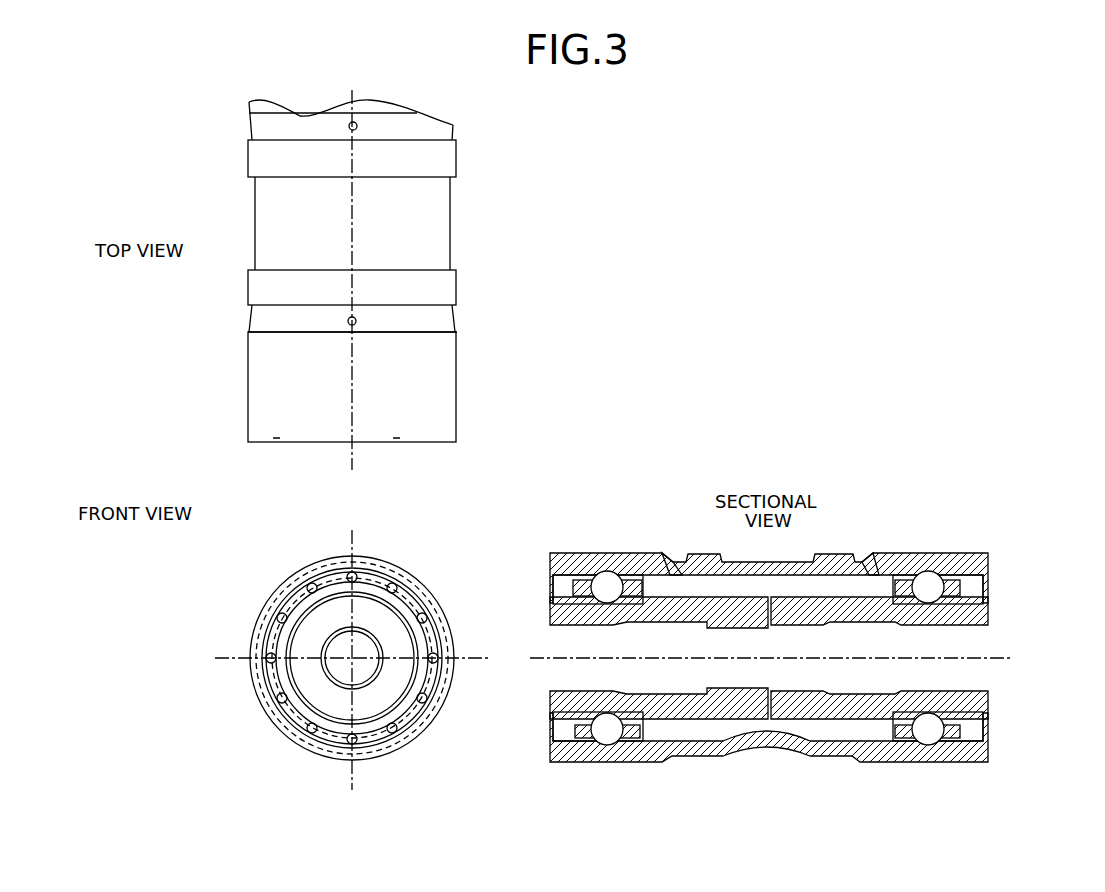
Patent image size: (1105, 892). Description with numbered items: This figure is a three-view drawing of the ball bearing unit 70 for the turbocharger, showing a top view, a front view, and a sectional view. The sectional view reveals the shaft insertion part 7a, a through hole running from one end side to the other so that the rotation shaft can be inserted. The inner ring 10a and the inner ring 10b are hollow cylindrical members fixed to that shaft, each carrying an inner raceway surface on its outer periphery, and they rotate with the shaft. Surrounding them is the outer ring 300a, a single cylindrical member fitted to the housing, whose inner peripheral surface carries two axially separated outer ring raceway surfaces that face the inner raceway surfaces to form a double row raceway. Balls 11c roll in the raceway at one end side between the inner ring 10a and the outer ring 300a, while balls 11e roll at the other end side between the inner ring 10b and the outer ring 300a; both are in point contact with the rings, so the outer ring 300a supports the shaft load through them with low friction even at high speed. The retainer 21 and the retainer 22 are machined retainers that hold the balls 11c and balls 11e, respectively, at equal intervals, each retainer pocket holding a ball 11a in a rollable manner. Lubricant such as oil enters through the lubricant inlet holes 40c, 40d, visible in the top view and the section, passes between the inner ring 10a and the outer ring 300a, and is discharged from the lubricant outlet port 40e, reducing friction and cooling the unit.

The shaft insertion part 7a is at (365, 672).
The inner ring 10a is at (565, 612).
The inner ring 10b is at (980, 612).
The ball 11a is at (275, 645).
The balls 11c is at (606, 572).
The balls 11e is at (928, 572).
The retainer 21 is at (632, 574).
The retainer 22 is at (962, 588).
The lubricant inlet hole 40c is at (356, 321).
The lubricant inlet hole 40d is at (357, 125).
The lubricant outlet port 40e is at (766, 750).
The ball bearing unit for the turbocharger 70 is at (474, 310).
The outer ring 300a is at (650, 562).